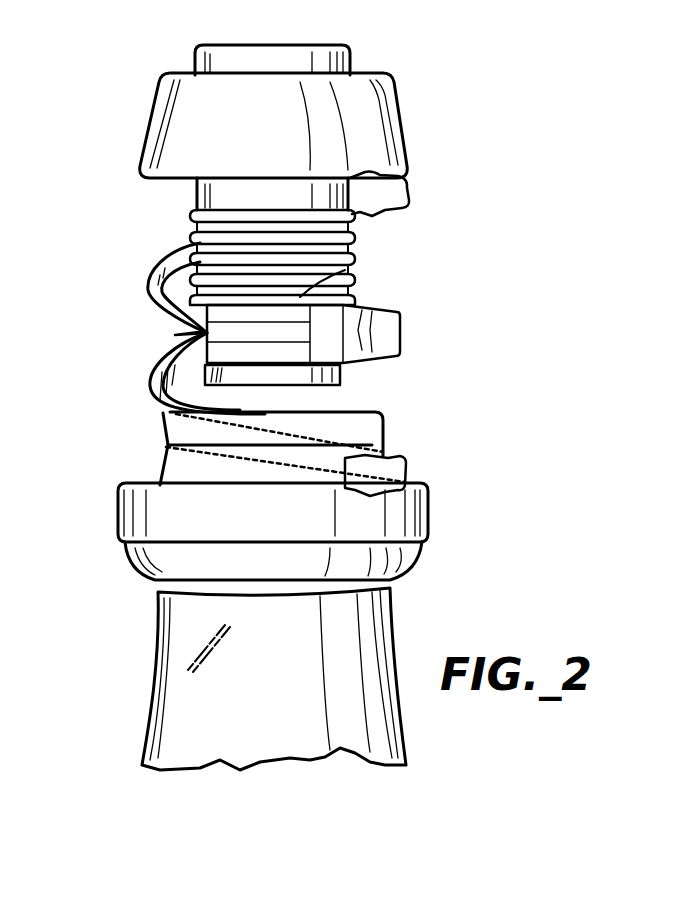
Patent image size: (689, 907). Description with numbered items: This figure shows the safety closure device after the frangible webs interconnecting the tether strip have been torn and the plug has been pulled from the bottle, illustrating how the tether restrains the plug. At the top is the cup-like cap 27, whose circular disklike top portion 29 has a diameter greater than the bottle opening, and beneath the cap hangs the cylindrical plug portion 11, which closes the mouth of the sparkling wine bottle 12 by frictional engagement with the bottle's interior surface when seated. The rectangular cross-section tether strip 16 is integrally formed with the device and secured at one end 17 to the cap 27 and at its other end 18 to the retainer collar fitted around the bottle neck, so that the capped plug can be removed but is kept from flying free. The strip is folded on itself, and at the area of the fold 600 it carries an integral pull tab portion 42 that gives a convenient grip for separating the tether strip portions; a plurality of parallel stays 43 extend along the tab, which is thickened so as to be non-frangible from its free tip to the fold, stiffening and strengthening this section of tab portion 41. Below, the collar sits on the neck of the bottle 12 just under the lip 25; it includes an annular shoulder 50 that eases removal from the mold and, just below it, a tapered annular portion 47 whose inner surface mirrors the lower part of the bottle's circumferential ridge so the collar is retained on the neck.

The cylindrical plug portion 11 is at (350, 227).
The sparkling wine bottle 12 is at (158, 450).
The tether strip 16 is at (150, 290).
The tether strip end 17 is at (400, 200).
The tether strip end 18 is at (393, 466).
The lip 25 is at (362, 412).
The cap 27 is at (138, 134).
The circular disklike top portion 29 is at (275, 45).
The tab portion 41 is at (250, 368).
The pull tab portion 42 is at (387, 342).
The parallel stays 43 is at (350, 270).
The tapered annular portion 47 is at (133, 571).
The annular shoulder 50 is at (424, 543).
The fold 600 is at (205, 333).